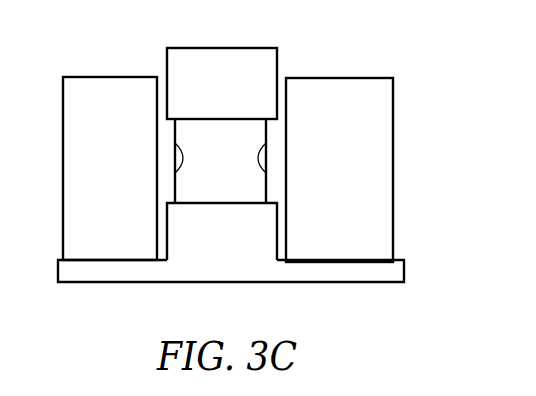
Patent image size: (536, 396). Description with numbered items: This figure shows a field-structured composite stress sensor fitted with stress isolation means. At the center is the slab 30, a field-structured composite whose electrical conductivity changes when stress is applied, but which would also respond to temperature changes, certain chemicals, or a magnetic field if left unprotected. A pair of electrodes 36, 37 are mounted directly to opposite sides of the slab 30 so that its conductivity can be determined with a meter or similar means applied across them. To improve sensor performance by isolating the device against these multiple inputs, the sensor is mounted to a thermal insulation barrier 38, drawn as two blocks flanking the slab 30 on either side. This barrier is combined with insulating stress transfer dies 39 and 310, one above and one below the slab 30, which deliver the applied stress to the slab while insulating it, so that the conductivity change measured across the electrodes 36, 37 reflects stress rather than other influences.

The slab 30 is at (207, 168).
The electrode 36 is at (178, 157).
The electrode 37 is at (262, 157).
The thermal insulation barrier 38 is at (97, 112).
The insulating stress transfer die 39 is at (208, 88).
The insulating stress transfer die 310 is at (203, 262).